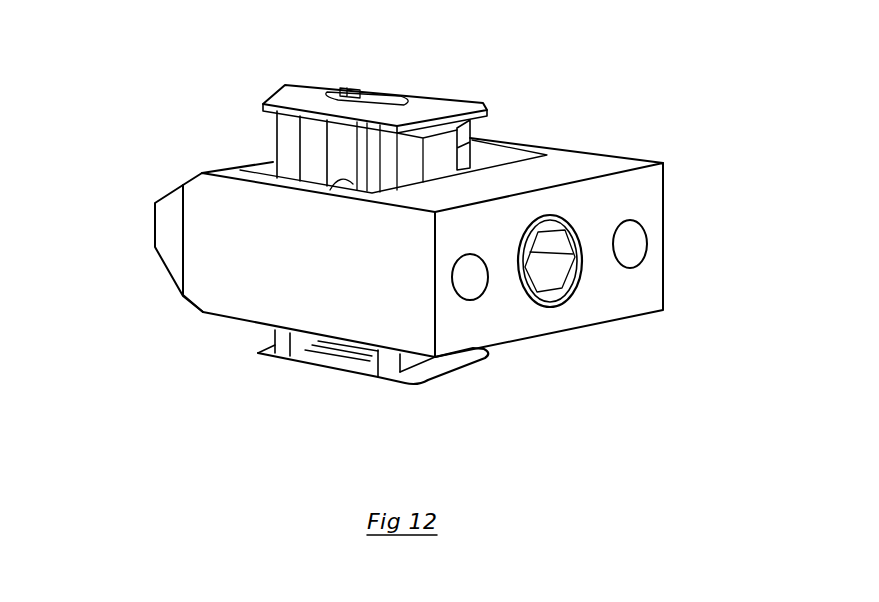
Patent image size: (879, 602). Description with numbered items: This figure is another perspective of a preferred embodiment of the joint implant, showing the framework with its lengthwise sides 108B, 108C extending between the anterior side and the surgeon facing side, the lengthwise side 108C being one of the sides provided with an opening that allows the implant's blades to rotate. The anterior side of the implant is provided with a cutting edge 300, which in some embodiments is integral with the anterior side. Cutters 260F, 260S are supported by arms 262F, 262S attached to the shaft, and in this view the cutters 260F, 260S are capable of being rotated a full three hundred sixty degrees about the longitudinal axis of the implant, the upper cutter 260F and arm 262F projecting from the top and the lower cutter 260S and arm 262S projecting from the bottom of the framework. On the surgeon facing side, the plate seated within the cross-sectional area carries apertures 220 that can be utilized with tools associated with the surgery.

The lengthwise side 108B is at (276, 296).
The lengthwise side 108C is at (587, 165).
The cutting edge 300 is at (168, 191).
The apertures 220 is at (480, 302).
The cutter 260F is at (332, 78).
The arm 262F is at (460, 150).
The cutter 260S is at (366, 378).
The arm 262S is at (289, 342).